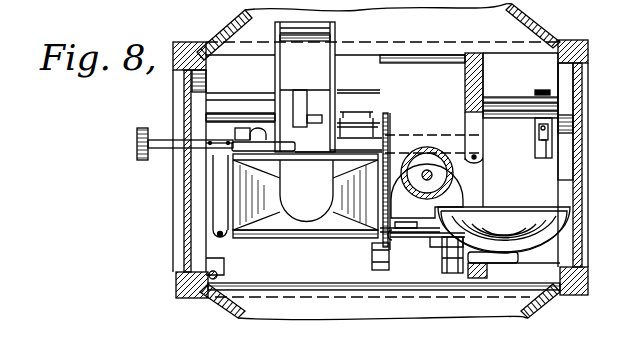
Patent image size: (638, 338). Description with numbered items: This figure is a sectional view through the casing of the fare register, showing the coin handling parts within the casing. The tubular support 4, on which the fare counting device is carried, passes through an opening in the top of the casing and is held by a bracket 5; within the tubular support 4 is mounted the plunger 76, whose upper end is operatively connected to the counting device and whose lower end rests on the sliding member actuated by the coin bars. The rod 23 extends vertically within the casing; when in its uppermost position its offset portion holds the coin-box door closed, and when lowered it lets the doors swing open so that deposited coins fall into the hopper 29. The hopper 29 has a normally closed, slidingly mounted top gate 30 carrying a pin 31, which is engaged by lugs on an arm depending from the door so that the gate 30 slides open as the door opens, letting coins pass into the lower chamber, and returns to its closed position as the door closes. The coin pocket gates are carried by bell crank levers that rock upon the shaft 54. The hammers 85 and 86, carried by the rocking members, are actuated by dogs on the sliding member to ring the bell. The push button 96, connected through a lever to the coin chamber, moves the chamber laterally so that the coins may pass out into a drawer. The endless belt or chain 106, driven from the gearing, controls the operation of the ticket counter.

The tubular support 4 is at (426, 150).
The bracket 5 is at (417, 133).
The rod 23 is at (218, 274).
The hopper 29 is at (282, 238).
The top gate 30 is at (305, 192).
The pin 31 is at (314, 116).
The shaft 54 is at (510, 98).
The plunger 76 is at (432, 176).
The hammer 85 is at (372, 264).
The hammer 86 is at (449, 263).
The push button 96 is at (137, 145).
The endless belt or chain 106 is at (540, 153).